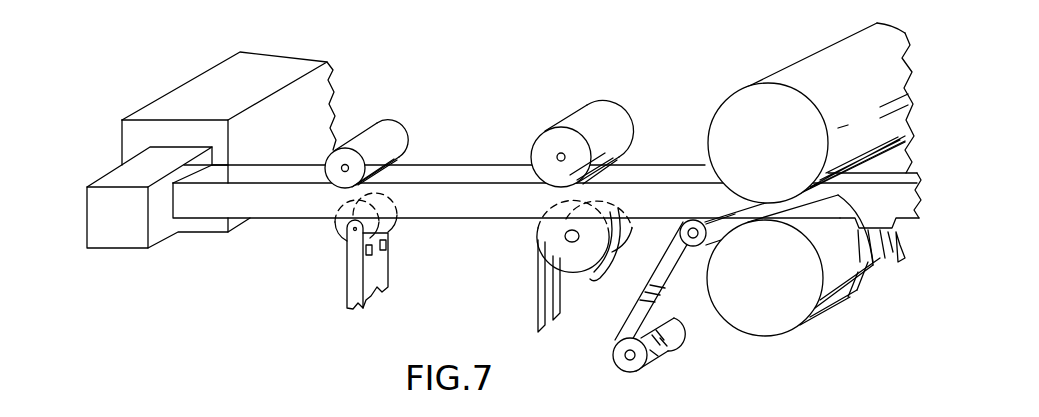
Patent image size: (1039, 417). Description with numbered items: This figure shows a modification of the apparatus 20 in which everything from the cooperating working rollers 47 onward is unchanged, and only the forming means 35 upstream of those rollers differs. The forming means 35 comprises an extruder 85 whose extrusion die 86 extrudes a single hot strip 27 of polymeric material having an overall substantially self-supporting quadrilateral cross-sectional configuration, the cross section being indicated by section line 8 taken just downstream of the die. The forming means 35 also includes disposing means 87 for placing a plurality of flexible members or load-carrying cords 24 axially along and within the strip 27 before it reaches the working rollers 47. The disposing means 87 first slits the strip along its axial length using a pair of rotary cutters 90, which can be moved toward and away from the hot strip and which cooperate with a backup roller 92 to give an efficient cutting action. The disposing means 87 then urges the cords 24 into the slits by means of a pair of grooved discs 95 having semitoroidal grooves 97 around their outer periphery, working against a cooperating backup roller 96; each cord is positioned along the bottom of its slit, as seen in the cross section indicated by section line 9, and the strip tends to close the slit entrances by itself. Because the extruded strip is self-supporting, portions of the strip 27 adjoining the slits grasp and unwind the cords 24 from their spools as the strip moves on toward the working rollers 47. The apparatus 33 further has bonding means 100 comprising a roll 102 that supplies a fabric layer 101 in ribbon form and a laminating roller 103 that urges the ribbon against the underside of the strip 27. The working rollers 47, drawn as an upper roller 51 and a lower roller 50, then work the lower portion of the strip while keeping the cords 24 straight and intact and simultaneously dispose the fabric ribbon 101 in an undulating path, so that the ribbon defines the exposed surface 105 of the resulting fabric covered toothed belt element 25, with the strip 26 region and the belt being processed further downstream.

The section line 8- 8 is at (453, 175).
The section line 9- 9 is at (659, 175).
The apparatus 20 is at (836, 414).
The flexible members 24 is at (559, 286).
The toothed belt element 25 is at (871, 175).
The strip 26 is at (885, 273).
The single strip 27 is at (262, 206).
The apparatus 33 is at (555, 50).
The forming means 35 is at (122, 88).
The working rollers 47 is at (777, 58).
The lower roller 50 is at (787, 295).
The upper roller 51 is at (786, 161).
The extruder 85 is at (190, 84).
The extrusion die 86 is at (118, 176).
The disposing means 87 is at (388, 311).
The rotary cutters 90 is at (337, 232).
The backup roller 92 is at (386, 126).
The grooved discs 95 is at (539, 226).
The backup roller 96 is at (576, 120).
The semitoroidal grooves 97 is at (610, 257).
The bonding means 100 is at (707, 313).
The fabric layer 101 is at (624, 318).
The roll 102 is at (622, 372).
The laminating roller 103 is at (692, 250).
The exposed surface 105 is at (919, 212).